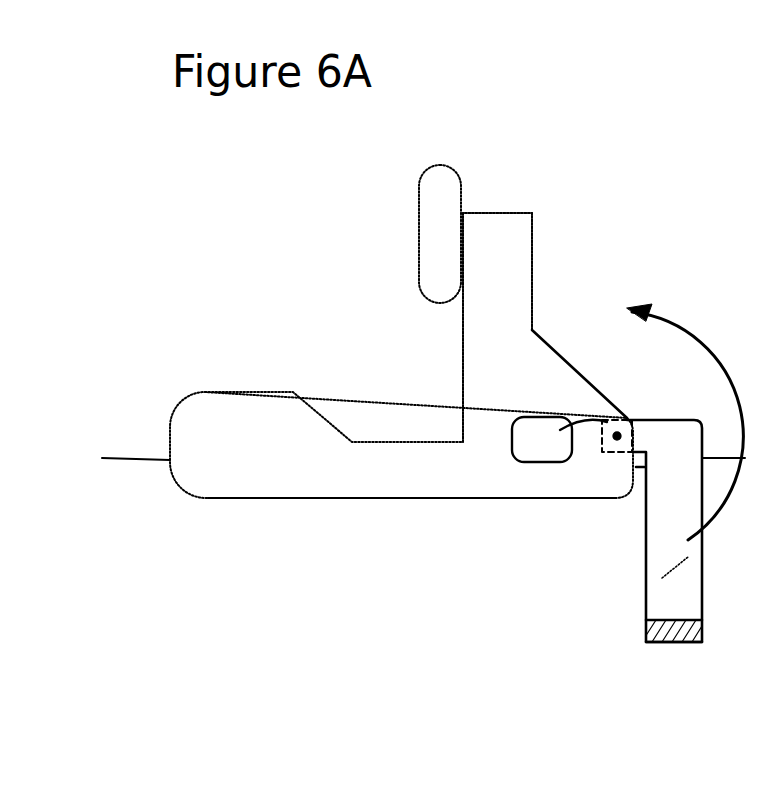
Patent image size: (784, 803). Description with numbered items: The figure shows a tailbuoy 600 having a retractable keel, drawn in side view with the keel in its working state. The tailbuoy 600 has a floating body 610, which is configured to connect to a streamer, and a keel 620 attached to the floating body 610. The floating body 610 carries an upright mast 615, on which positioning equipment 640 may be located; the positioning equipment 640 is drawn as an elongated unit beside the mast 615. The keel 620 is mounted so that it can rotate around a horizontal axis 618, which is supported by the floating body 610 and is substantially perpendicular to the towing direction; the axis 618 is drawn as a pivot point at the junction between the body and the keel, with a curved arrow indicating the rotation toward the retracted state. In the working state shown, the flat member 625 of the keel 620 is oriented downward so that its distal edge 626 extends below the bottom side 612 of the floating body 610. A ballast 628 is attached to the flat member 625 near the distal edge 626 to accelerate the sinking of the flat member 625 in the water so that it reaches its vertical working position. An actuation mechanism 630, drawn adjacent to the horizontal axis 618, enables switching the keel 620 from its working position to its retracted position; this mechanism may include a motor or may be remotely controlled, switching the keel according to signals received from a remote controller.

The tailbuoy 600 is at (250, 308).
The floating body 610 is at (262, 478).
The bottom side 612 is at (375, 498).
The mast 615 is at (515, 245).
The horizontal axis 618 is at (618, 432).
The keel 620 is at (695, 597).
The flat member 625 is at (657, 602).
The distal edge 626 is at (668, 641).
The ballast 628 is at (695, 632).
The actuation mechanism 630 is at (547, 417).
The positioning equipment 640 is at (418, 240).